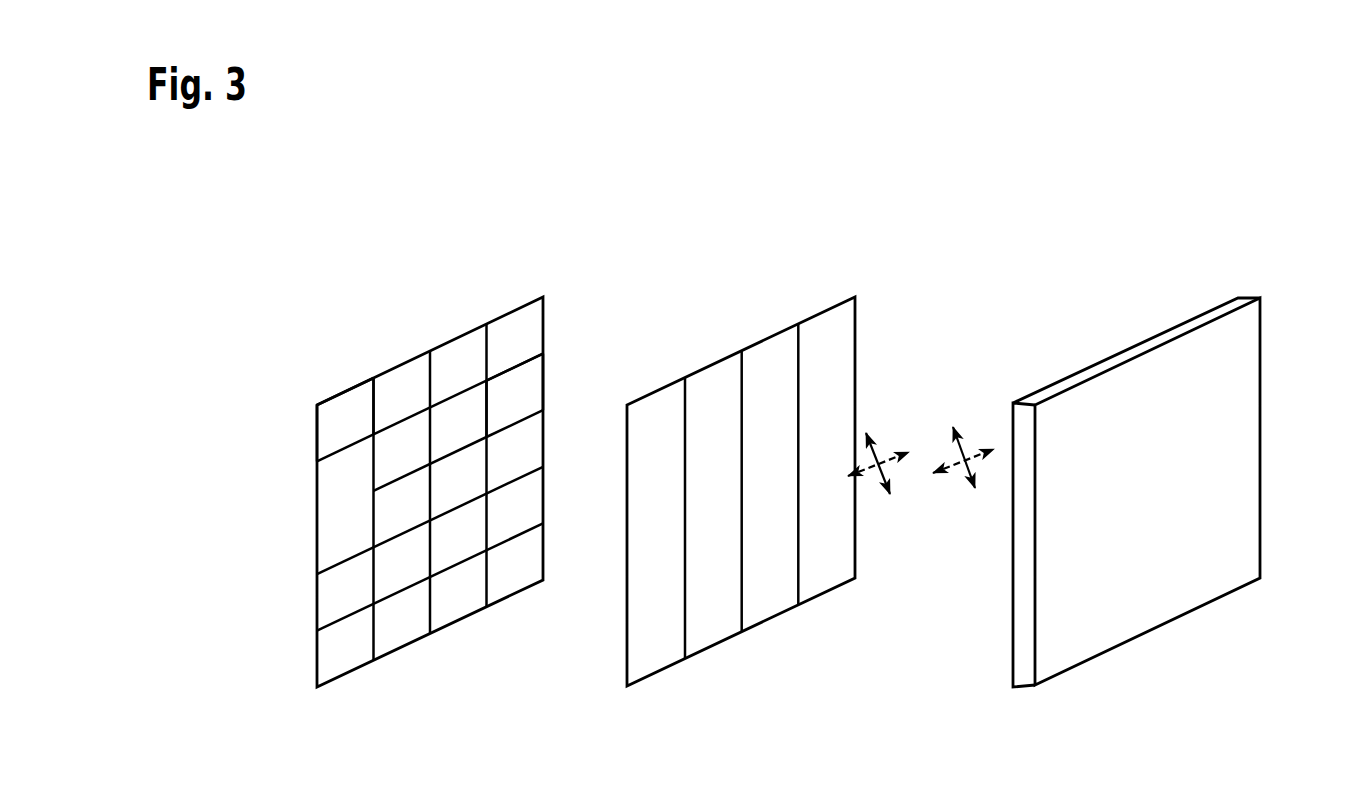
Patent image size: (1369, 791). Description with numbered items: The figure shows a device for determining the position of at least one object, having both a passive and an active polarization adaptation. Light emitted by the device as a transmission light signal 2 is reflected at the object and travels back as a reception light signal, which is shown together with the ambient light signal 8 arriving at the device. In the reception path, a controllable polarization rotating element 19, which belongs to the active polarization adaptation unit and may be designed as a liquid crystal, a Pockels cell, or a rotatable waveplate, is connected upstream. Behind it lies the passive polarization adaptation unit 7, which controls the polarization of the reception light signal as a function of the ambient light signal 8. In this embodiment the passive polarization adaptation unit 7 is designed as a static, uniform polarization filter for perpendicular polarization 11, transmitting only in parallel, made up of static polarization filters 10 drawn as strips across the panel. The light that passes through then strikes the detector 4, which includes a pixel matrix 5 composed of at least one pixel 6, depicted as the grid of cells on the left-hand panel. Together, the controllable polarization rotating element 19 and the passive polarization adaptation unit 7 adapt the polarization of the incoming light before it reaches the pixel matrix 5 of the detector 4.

The first transmission light signal 2 is at (878, 450).
The detector 4 is at (426, 478).
The pixel matrix 5 is at (355, 423).
The pixel 6 is at (522, 393).
The passive polarization adaptation unit 7 is at (784, 488).
The ambient light signal 8 is at (870, 467).
The static polarization filters 10 is at (741, 528).
The polarization filter for perpendicular polarization 11 is at (720, 627).
The controllable polarization rotating element 19 is at (1210, 439).